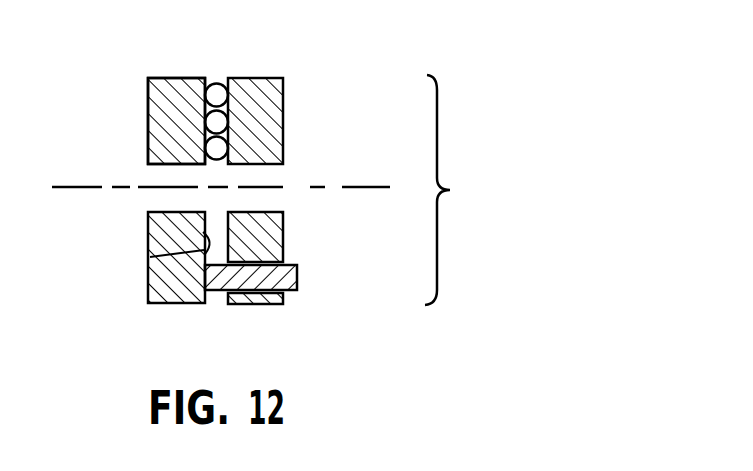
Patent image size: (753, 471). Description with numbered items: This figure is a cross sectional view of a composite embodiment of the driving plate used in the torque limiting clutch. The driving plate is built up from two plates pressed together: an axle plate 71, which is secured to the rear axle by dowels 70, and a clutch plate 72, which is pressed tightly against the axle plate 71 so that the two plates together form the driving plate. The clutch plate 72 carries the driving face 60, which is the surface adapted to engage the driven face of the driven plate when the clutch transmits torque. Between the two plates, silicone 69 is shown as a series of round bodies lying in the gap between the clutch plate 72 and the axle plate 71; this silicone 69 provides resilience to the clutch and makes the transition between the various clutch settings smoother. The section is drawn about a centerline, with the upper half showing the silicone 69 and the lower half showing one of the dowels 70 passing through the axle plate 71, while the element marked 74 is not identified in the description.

The driving face 60 is at (148, 140).
The silicone 69 is at (216, 86).
The dowels 70 is at (297, 277).
The axle plate 71 is at (283, 120).
The clutch plate 72 is at (148, 98).
The tab 74 is at (152, 256).